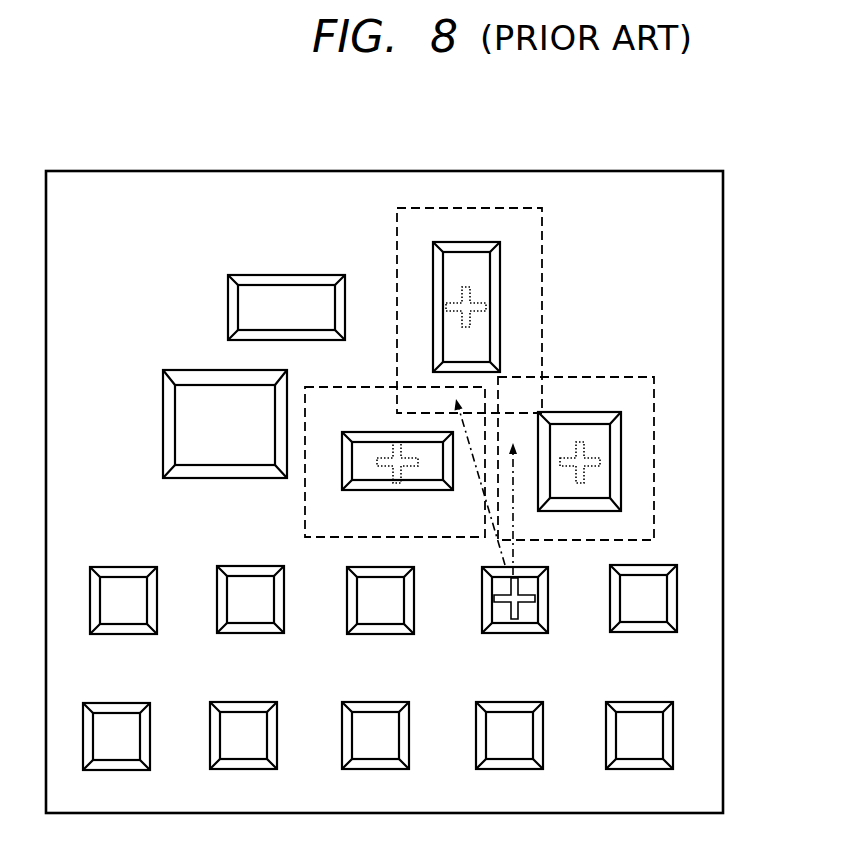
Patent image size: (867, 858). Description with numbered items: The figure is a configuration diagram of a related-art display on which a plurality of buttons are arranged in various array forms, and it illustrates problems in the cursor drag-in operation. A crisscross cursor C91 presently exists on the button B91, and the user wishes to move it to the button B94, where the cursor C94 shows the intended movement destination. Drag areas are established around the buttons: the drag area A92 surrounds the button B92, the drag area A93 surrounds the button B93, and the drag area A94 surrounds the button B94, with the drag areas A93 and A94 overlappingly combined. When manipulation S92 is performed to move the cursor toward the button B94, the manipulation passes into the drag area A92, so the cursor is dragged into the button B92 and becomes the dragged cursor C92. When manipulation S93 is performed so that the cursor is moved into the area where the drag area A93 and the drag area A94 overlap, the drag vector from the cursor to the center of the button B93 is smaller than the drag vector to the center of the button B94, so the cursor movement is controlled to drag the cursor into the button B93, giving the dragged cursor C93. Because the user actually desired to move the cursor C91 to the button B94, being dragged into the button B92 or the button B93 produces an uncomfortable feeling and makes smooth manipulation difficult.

The drag area A94 is at (486, 208).
The button B94 is at (464, 263).
The cursor C94 is at (478, 300).
The drag area A93 is at (376, 387).
The button B93 is at (372, 452).
The cursor C93 is at (388, 470).
The drag area A92 is at (627, 377).
The button B92 is at (575, 433).
The cursor C92 is at (595, 458).
The button B91 is at (505, 612).
The crisscross cursor C91 is at (523, 603).
The manipulation S93 is at (478, 478).
The manipulation S92 is at (515, 503).